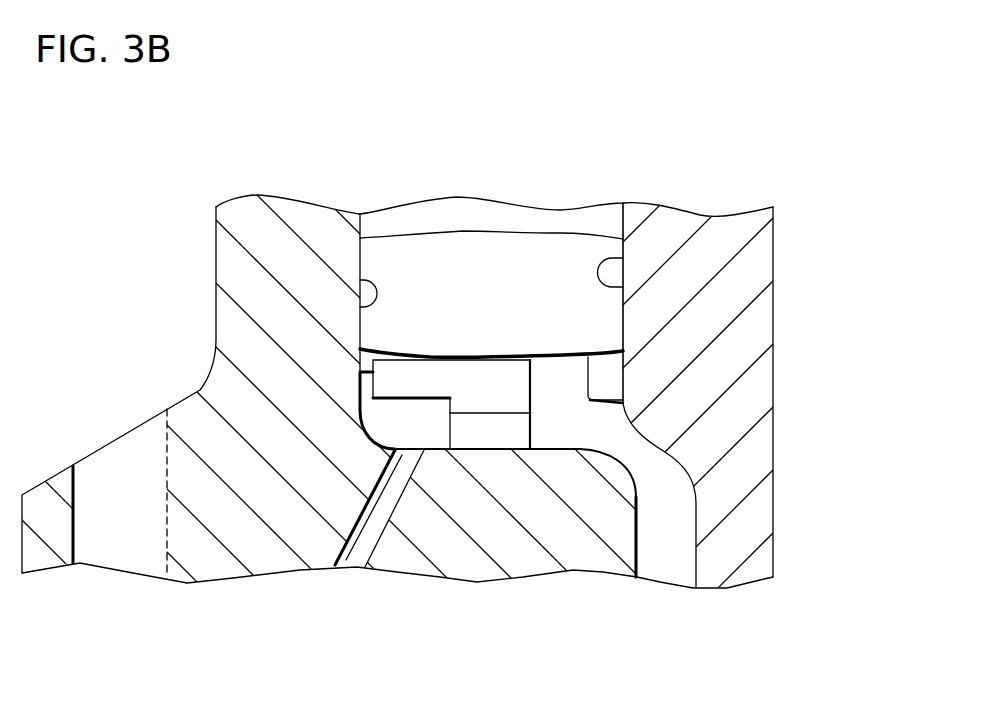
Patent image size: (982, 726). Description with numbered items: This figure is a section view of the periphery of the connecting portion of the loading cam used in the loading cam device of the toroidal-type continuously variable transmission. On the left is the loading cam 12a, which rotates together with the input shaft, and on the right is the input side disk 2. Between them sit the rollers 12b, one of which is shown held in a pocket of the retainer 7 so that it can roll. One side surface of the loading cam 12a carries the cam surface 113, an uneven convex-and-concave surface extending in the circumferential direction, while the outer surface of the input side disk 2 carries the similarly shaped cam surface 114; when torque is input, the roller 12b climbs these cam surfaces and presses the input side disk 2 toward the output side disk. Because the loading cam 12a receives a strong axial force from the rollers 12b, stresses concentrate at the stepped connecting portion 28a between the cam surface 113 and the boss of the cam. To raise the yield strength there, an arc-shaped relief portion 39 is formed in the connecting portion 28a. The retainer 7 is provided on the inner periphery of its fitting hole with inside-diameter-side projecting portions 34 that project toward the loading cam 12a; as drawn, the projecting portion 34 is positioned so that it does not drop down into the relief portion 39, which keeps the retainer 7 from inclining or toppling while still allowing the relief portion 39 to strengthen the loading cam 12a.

The input side disk 2 is at (720, 350).
The retainer 7 is at (493, 380).
The loading cam 12a is at (220, 392).
The rollers 12b is at (557, 268).
The connecting portion 28a is at (363, 430).
The inside-diameter-side projecting portions 34 is at (415, 377).
The relief portion 39 is at (357, 403).
The cam surface 113 is at (360, 307).
The cam surface 114 is at (625, 287).